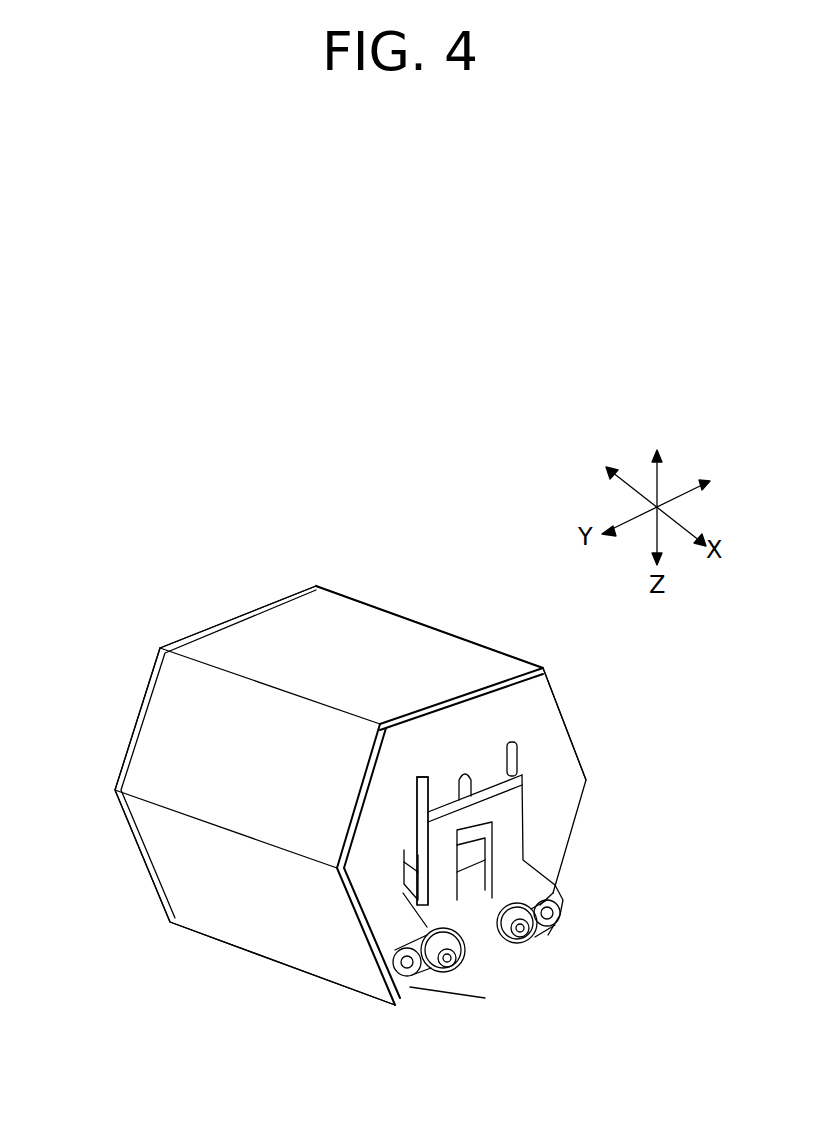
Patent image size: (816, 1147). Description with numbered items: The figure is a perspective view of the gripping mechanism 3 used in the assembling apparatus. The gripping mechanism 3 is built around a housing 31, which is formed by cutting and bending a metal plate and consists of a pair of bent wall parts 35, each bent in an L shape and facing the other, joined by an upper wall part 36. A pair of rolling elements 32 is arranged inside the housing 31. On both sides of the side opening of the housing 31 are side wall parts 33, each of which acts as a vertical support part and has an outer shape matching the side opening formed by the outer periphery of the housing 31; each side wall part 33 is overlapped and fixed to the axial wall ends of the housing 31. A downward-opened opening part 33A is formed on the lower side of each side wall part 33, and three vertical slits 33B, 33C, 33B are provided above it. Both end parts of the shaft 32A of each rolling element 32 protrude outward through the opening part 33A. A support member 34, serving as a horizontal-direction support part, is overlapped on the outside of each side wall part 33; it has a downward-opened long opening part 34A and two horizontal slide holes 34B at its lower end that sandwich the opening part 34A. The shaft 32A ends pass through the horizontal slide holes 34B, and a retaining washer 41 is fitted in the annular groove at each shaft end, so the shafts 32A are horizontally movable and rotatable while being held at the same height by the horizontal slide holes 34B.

The gripping mechanism 3 is at (346, 540).
The housing 31 is at (404, 628).
The rolling element 32 is at (503, 957).
The shaft 32A is at (405, 985).
The side wall part 33 is at (140, 702).
The opening part 33A is at (405, 862).
The vertical slit 33B is at (515, 744).
The vertical slit 33C is at (466, 770).
The support member 34 is at (525, 805).
The long opening part 34A is at (497, 846).
The horizontal slide hole 34B is at (378, 978).
The bent wall part 35 is at (235, 918).
The upper wall part 36 is at (330, 654).
The retaining washer 41 is at (420, 932).